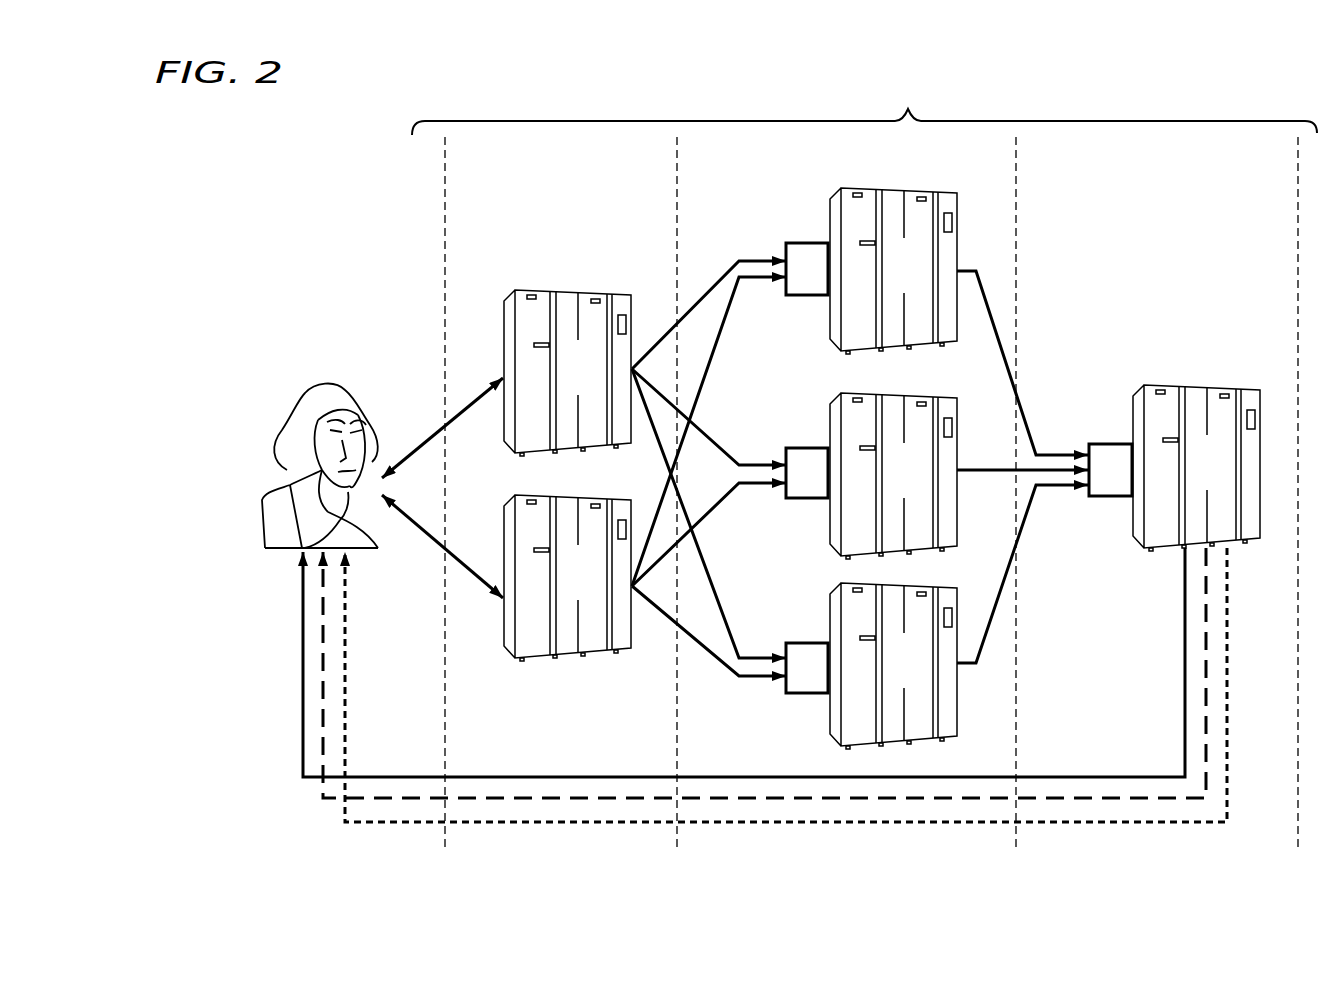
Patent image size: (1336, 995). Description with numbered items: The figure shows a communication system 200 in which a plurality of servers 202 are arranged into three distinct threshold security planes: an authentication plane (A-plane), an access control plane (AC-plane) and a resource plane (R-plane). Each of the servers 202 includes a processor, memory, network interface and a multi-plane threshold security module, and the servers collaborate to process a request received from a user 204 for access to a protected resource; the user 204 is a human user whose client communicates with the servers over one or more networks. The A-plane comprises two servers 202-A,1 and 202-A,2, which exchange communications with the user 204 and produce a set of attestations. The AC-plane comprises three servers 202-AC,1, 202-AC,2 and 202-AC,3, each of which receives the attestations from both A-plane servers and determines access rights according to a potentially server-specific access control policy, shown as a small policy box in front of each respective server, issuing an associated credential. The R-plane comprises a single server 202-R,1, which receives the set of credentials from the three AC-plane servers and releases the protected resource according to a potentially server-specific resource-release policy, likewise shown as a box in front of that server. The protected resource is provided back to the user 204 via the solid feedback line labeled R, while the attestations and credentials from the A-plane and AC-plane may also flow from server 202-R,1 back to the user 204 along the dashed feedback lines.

The communication system 200 is at (266, 186).
The servers 202 is at (864, 466).
The user 204 is at (268, 428).
The A-plane server 202-A,1 is at (572, 288).
The A-plane server 202-A,2 is at (548, 658).
The AC-plane server 202-AC,1 is at (828, 200).
The AC-plane server 202-AC,2 is at (828, 407).
The AC-plane server 202-AC,3 is at (828, 712).
The R-plane server 202-R,1 is at (1198, 383).